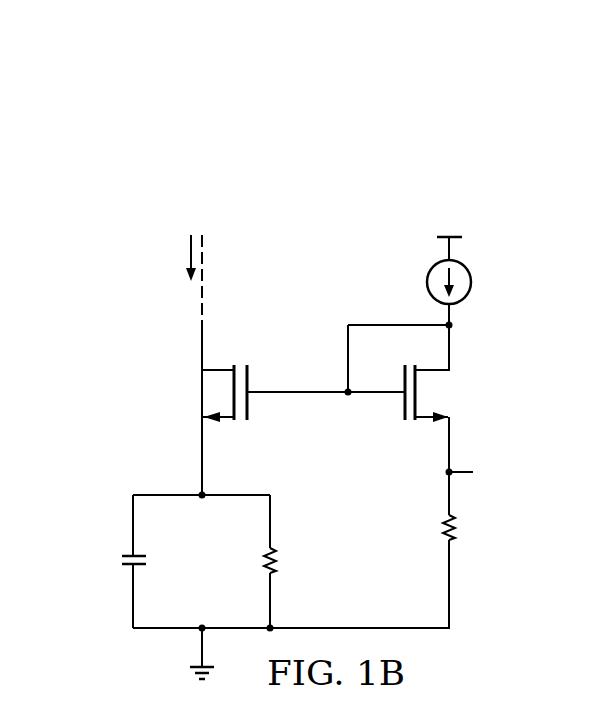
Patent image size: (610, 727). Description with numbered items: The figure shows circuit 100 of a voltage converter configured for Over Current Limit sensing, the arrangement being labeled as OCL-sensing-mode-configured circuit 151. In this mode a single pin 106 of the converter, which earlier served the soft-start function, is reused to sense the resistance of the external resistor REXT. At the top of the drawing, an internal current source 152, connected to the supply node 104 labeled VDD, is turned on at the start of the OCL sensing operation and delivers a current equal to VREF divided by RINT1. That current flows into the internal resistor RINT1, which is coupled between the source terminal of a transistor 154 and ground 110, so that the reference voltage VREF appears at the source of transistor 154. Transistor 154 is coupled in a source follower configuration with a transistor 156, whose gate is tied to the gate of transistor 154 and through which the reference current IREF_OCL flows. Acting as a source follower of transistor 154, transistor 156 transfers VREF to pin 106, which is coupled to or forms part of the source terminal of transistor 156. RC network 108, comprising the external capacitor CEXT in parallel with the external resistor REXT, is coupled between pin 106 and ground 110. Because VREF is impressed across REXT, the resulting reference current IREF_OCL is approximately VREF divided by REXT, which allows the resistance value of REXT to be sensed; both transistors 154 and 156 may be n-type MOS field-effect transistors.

The circuit 100 is at (243, 92).
The OCL-sensing-mode-configured circuit 151 is at (441, 154).
The supply voltage VDD node 104 is at (453, 243).
The internal current source 152 is at (427, 283).
The transistor 154 is at (403, 402).
The transistor 156 is at (249, 382).
The pin 106 is at (206, 491).
The RC network 108 is at (80, 611).
The ground 110 is at (190, 672).